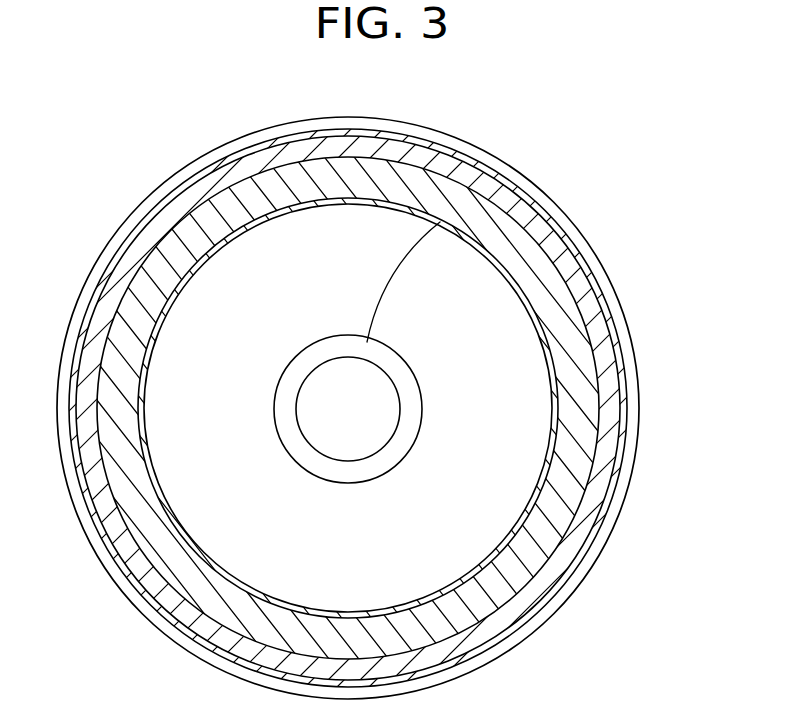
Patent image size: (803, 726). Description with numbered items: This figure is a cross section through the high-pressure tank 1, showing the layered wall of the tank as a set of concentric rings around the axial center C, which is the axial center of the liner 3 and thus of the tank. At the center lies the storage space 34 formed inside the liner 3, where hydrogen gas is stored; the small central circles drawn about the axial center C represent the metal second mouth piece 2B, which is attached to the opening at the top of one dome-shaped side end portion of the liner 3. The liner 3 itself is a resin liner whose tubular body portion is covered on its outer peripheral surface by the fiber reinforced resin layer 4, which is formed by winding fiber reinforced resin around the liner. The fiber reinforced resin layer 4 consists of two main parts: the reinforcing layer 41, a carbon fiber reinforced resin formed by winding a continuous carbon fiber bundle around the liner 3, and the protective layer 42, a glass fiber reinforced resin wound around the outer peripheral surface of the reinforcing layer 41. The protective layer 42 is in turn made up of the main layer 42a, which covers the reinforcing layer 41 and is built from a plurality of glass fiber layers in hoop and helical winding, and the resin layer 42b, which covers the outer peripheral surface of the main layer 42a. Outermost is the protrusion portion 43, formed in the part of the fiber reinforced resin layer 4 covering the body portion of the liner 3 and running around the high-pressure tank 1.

The high-pressure tank 1 is at (568, 100).
The second mouth piece 2B is at (475, 242).
The liner 3 is at (520, 252).
The fiber reinforced resin layer 4 is at (255, 167).
The storage space 34 is at (468, 381).
The reinforcing layer 41 is at (537, 232).
The protective layer 42 is at (672, 233).
The main layer 42a is at (575, 278).
The resin layer 42b is at (600, 311).
The protrusion portion 43 is at (600, 545).
The axial center C is at (366, 392).